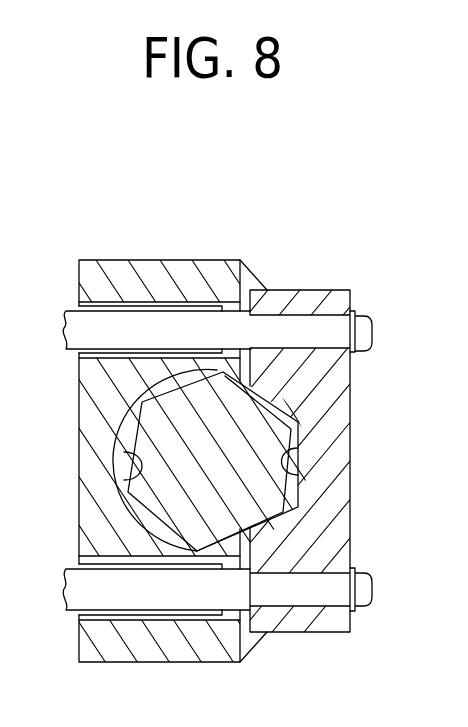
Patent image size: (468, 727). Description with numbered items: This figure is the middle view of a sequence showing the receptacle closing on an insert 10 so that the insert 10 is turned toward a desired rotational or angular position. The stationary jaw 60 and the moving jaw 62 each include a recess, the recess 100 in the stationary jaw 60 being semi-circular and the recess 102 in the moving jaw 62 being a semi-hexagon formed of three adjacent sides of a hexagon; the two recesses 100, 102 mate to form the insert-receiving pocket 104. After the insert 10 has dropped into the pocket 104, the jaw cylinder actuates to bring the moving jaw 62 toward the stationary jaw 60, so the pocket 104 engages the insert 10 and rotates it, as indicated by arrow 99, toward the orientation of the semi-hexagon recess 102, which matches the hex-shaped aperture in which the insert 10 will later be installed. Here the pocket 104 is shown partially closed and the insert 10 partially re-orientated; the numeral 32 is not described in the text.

The clamping connection 32 is at (323, 232).
The stationary jaw 60 is at (155, 258).
The moving jaw 62 is at (352, 290).
The insert 10 is at (135, 421).
The recess 100 is at (143, 477).
The arrow 99 is at (217, 373).
The insert-receiving pocket 104 is at (276, 395).
The recess 102 is at (300, 475).